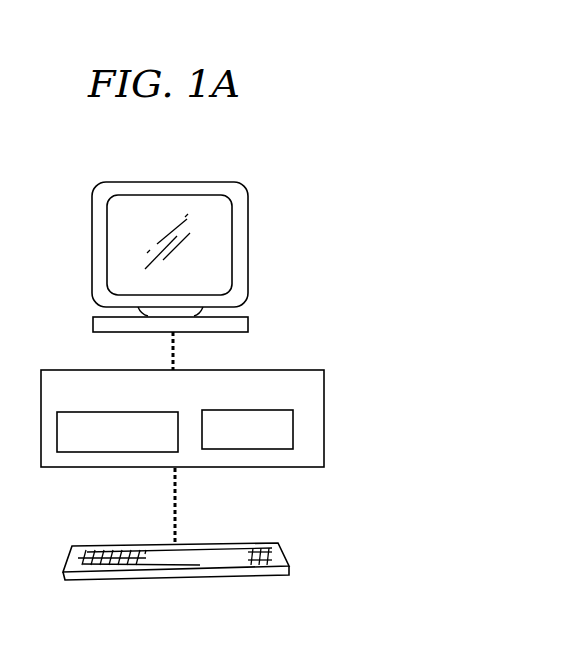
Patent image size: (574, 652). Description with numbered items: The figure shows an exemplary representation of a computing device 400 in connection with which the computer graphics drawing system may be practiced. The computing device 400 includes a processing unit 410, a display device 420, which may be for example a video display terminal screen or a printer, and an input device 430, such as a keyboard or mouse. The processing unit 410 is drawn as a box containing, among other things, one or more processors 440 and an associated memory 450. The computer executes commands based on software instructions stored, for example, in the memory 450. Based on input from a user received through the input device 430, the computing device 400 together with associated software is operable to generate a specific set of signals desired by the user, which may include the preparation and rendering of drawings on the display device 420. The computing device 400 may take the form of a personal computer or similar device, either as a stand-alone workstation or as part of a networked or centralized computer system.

The computing device 400 is at (293, 195).
The processing unit 410 is at (325, 415).
The display device 420 is at (248, 286).
The input device 430 is at (289, 558).
The processor 440 is at (92, 412).
The memory 450 is at (222, 410).